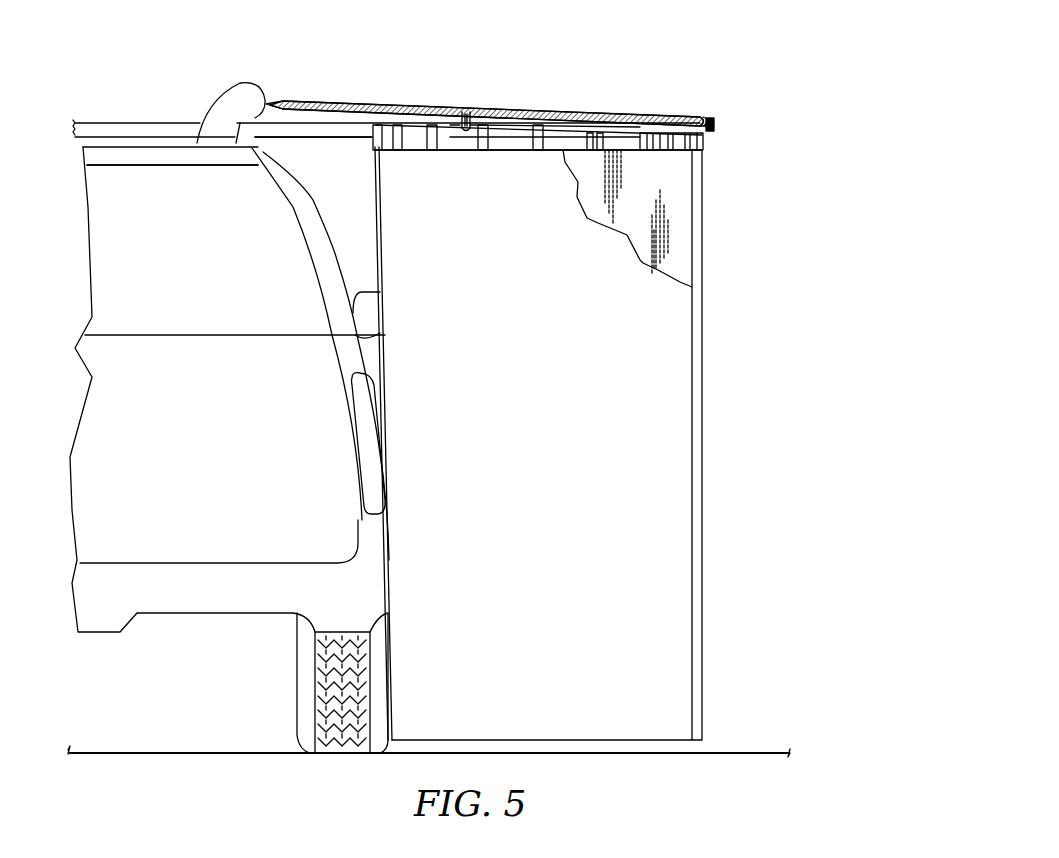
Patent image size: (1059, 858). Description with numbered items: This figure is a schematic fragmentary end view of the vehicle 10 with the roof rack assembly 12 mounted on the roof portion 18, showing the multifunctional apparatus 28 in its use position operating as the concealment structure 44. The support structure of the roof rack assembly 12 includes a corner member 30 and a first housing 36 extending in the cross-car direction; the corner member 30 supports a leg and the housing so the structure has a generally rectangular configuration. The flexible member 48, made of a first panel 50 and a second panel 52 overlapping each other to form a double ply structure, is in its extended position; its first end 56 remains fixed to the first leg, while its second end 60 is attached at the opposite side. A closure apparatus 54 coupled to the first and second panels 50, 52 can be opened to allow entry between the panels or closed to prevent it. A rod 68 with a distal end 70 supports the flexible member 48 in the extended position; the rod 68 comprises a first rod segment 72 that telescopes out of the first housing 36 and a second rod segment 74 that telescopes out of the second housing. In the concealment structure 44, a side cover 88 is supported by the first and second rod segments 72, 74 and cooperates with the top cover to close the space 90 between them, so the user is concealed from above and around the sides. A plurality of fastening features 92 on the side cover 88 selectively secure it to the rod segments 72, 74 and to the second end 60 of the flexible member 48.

The vehicle 10 is at (128, 657).
The roof rack assembly 12 is at (145, 76).
The roof portion 18 is at (140, 146).
The multifunctional apparatus 28 is at (742, 77).
The corner member 30 is at (237, 103).
The first housing 36 is at (160, 143).
The concealment structure 44 is at (750, 181).
The flexible member 48 is at (487, 113).
The first panel 50 is at (322, 112).
The second panel 52 is at (333, 102).
The closure apparatus 54 is at (440, 107).
The first end 56 is at (273, 105).
The second end 60 is at (710, 117).
The rod 68 is at (727, 129).
The distal end 70 is at (718, 130).
The first rod segment 72 is at (507, 127).
The second rod segment 74 is at (302, 136).
The side cover 88 is at (667, 210).
The space 90 is at (669, 248).
The fastening features 92 is at (602, 143).